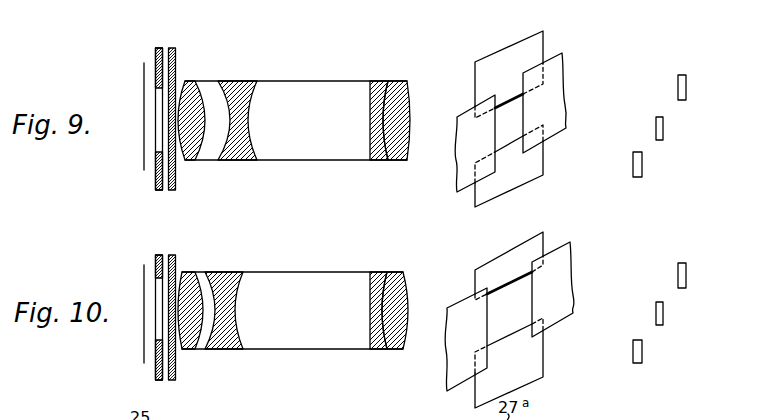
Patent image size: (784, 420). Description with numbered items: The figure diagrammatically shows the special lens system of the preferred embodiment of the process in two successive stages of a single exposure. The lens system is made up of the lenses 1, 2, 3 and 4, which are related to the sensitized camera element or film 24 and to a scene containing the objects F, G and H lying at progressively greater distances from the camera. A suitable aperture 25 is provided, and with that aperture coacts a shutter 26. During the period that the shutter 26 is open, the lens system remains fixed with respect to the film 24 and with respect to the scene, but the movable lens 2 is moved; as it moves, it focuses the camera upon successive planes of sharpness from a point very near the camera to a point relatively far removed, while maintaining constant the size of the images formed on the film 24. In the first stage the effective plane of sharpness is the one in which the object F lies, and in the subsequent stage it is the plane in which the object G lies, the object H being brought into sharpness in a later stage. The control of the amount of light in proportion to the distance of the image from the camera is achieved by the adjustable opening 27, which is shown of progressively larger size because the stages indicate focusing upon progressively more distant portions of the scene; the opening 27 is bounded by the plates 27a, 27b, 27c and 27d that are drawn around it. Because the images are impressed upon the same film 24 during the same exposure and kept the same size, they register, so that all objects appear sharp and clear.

In FIG. 9, the lens 1 is at (196, 150).
In FIG. 10, the lens 1 is at (195, 343).
In FIG. 9, the movable lens 2 is at (243, 155).
In FIG. 10, the movable lens 2 is at (228, 345).
In FIG. 9, the lens 3 is at (380, 157).
In FIG. 10, the lens 3 is at (370, 337).
In FIG. 9, the lens 4 is at (403, 150).
In FIG. 10, the lens 4 is at (401, 338).
In FIG. 9, the sensitized camera element 24 is at (144, 73).
In FIG. 10, the sensitized camera element 24 is at (143, 268).
In FIG. 9, the aperture 25 is at (160, 48).
In FIG. 10, the aperture 25 is at (158, 255).
In FIG. 9, the shutter 26 is at (178, 62).
In FIG. 10, the shutter 26 is at (176, 259).
In FIG. 9, the adjustable opening 27 is at (522, 107).
In FIG. 10, the adjustable opening 27 is at (530, 294).
In FIG. 9, the upper aperture plate 27a is at (500, 51).
In FIG. 10, the upper aperture plate 27a is at (508, 251).
In FIG. 9, the right aperture plate 27b is at (553, 88).
In FIG. 10, the right aperture plate 27b is at (563, 254).
In FIG. 9, the lower aperture plate 27c is at (530, 168).
In FIG. 10, the lower aperture plate 27c is at (530, 362).
In FIG. 9, the left aperture plate 27d is at (463, 186).
In FIG. 10, the left aperture plate 27d is at (443, 374).
In FIG. 9, the object H is at (686, 88).
In FIG. 10, the object H is at (686, 275).
In FIG. 9, the object G is at (663, 128).
In FIG. 10, the object G is at (663, 313).
In FIG. 9, the object F is at (642, 167).
In FIG. 10, the object F is at (642, 353).